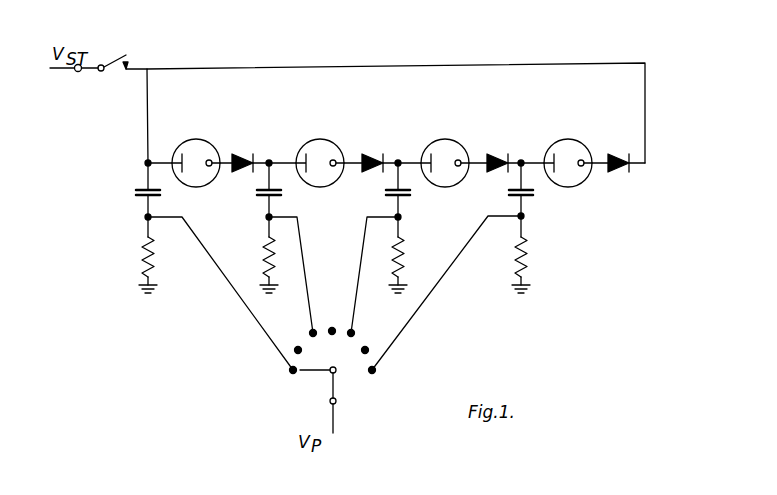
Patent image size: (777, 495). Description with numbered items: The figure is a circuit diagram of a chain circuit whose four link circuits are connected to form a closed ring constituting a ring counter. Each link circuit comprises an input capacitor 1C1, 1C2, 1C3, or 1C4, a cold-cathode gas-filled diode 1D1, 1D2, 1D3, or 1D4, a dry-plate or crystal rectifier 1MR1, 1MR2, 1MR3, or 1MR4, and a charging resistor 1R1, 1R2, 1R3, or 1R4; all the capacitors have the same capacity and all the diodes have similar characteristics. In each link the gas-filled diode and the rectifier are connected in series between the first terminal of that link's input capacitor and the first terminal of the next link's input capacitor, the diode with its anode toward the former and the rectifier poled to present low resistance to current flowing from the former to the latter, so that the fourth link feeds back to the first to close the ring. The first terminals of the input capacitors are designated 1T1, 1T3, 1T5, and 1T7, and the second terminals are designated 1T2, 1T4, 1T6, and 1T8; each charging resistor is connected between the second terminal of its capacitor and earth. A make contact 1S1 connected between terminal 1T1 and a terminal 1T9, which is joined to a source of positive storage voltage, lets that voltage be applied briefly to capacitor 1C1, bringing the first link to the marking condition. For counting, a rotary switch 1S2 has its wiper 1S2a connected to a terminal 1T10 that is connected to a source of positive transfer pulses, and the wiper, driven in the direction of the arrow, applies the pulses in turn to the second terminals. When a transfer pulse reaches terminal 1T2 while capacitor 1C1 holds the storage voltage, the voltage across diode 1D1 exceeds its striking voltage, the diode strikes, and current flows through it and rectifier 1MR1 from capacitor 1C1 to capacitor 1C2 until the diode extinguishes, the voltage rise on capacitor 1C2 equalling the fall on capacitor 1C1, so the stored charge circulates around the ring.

The make contact 1S1 is at (117, 51).
The terminal 1T9 is at (78, 72).
The first terminal of input capacitor 1C1 1T1 is at (143, 167).
The second terminal of input capacitor 1C1 1T2 is at (143, 218).
The first terminal of input capacitor 1C2 1T3 is at (265, 168).
The second terminal of input capacitor 1C2 1T4 is at (265, 218).
The first terminal of input capacitor 1C3 1T5 is at (393, 168).
The second terminal of input capacitor 1C3 1T6 is at (401, 219).
The first terminal of input capacitor 1C4 1T7 is at (518, 167).
The second terminal of input capacitor 1C4 1T8 is at (525, 218).
The cold-cathode gas-filled diode 1D1 is at (196, 152).
The cold-cathode gas-filled diode 1D2 is at (320, 152).
The cold-cathode gas-filled diode 1D3 is at (445, 152).
The cold-cathode gas-filled diode 1D4 is at (568, 152).
The dry-plate or crystal rectifier 1MR1 is at (246, 148).
The dry-plate or crystal rectifier 1MR2 is at (378, 148).
The dry-plate or crystal rectifier 1MR3 is at (503, 148).
The dry-plate or crystal rectifier 1MR4 is at (622, 150).
The input capacitor 1C1 is at (166, 199).
The input capacitor 1C2 is at (288, 201).
The input capacitor 1C3 is at (415, 203).
The input capacitor 1C4 is at (537, 202).
The charging resistor 1R1 is at (167, 257).
The charging resistor 1R2 is at (251, 257).
The charging resistor 1R3 is at (416, 257).
The charging resistor 1R4 is at (501, 257).
The rotary switch 1S2 is at (315, 346).
The wiper 1S2a is at (315, 374).
The terminal 1T10 is at (337, 403).